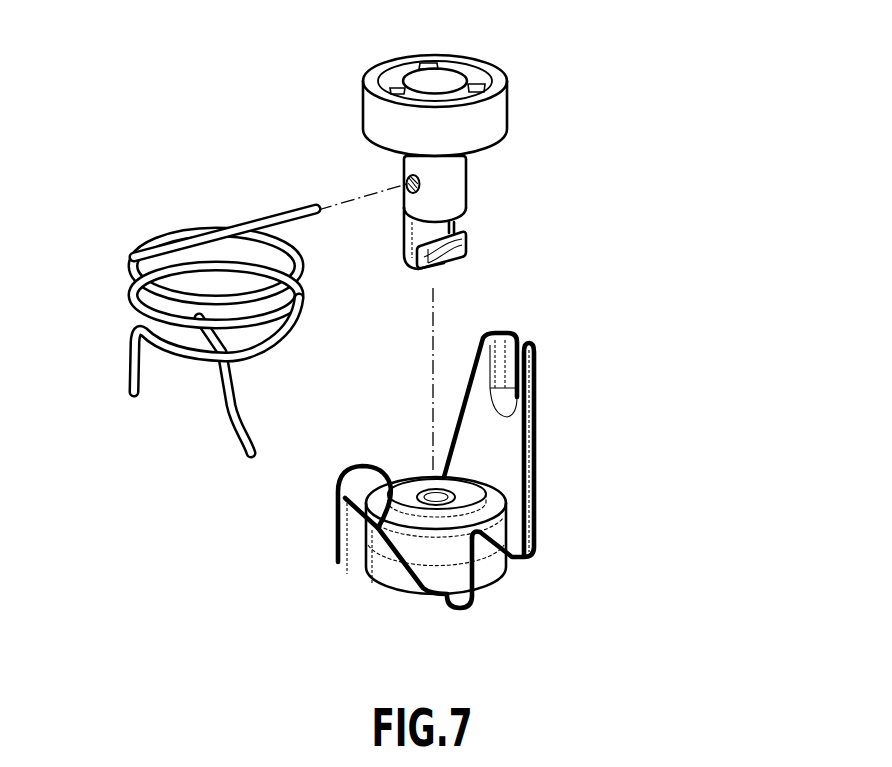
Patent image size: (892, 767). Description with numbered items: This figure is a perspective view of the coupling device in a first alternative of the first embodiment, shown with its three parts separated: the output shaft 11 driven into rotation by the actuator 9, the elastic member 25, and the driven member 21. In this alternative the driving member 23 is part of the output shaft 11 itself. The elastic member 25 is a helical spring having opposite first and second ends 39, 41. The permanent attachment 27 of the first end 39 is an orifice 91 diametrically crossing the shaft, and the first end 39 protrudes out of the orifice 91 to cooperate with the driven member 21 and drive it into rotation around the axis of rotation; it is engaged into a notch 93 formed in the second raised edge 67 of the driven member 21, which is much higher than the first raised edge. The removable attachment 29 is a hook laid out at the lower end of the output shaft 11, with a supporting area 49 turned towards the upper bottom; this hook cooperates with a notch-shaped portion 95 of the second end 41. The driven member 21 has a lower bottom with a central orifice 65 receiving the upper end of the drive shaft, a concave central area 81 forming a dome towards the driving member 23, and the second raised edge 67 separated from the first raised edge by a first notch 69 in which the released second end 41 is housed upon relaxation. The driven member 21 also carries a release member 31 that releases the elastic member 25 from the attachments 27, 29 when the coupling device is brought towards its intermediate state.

The actuator 9 is at (483, 71).
The output shaft 11 is at (454, 225).
The driven member 21 is at (454, 478).
The driving member 23 is at (424, 154).
The elastic member 25 is at (187, 339).
The permanent attachment 27 is at (362, 203).
The removable attachment 29 is at (477, 227).
The release member 31 is at (447, 518).
The first end 39 is at (288, 214).
The second end 41 is at (216, 379).
The supporting area 49 is at (415, 259).
The orifice 65 is at (422, 490).
The second raised edge 67 is at (536, 453).
The first notch 69 is at (444, 600).
The concave central area 81 is at (493, 510).
The orifice 91 is at (393, 180).
The notch 93 is at (514, 333).
The notch-shaped portion 95 is at (233, 368).